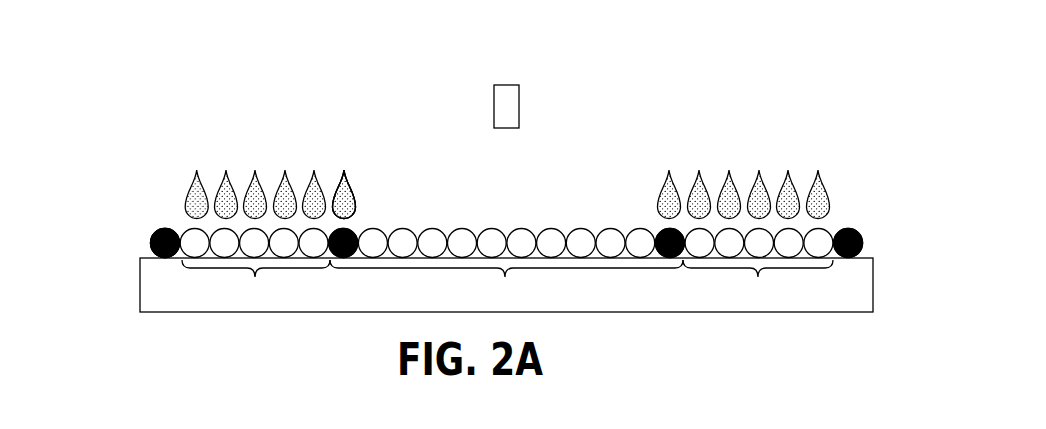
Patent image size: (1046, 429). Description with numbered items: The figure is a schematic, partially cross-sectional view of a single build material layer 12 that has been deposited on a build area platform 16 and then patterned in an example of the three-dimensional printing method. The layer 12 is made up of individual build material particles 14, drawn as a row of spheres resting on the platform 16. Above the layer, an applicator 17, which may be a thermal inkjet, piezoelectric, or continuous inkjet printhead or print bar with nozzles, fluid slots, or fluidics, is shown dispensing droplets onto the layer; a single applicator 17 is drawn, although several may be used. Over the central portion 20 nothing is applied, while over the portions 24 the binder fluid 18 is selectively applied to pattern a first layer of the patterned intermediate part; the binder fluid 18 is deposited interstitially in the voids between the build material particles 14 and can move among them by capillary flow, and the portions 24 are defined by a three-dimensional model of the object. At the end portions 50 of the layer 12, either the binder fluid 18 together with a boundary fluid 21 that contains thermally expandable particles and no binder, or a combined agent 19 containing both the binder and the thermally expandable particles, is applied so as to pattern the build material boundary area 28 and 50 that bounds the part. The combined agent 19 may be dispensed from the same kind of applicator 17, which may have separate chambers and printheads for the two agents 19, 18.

The build material layer 12 is at (128, 240).
The build material particles 14 is at (228, 247).
The build area platform 16 is at (182, 287).
The applicator 17 is at (507, 107).
The binder fluid 18 is at (253, 198).
The combined agent 19 is at (350, 198).
The boundary fluid 21 is at (344, 194).
The interior region 20 is at (506, 283).
The portion of the build material layer 24 is at (507, 283).
The build material boundary area 28 is at (162, 194).
The portion of the build material layer 50 is at (339, 295).